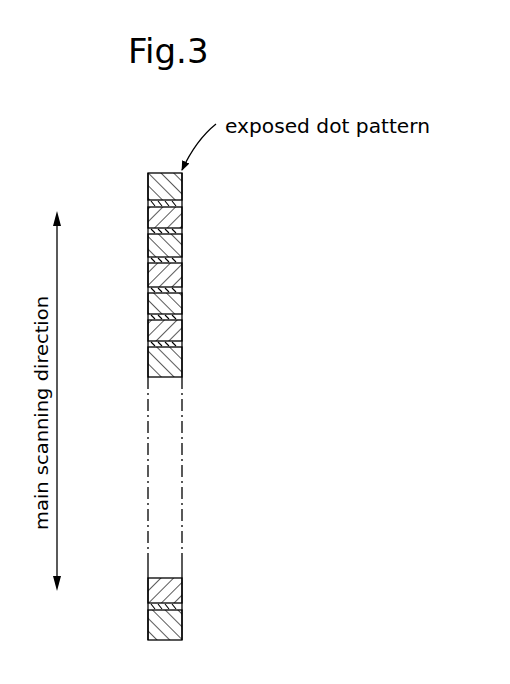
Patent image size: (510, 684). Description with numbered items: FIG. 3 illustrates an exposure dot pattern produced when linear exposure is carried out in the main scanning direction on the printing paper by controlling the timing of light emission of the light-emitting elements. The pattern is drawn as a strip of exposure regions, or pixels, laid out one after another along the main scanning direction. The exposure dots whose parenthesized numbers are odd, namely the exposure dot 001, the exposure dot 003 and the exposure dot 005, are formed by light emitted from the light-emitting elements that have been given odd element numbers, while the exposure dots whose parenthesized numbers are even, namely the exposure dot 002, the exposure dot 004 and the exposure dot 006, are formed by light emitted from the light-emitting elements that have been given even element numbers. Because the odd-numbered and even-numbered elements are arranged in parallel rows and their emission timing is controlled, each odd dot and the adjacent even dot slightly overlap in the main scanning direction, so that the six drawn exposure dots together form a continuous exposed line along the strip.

The exposure dot 001 is at (149, 188).
The exposure dot 002 is at (176, 221).
The exposure dot 003 is at (149, 247).
The exposure dot 004 is at (177, 275).
The exposure dot 005 is at (149, 302).
The exposure dot 006 is at (177, 334).